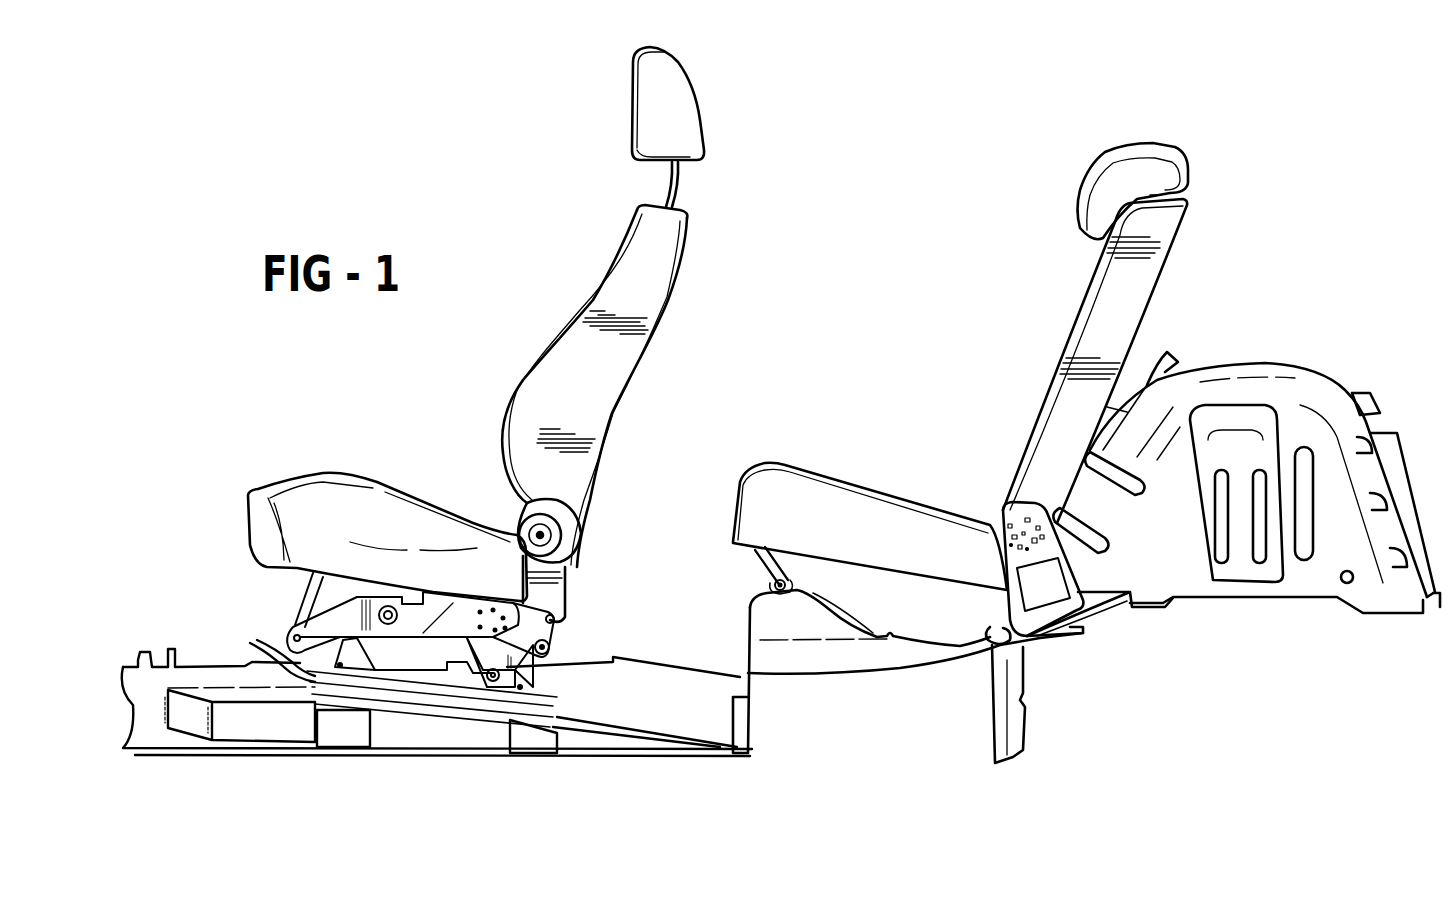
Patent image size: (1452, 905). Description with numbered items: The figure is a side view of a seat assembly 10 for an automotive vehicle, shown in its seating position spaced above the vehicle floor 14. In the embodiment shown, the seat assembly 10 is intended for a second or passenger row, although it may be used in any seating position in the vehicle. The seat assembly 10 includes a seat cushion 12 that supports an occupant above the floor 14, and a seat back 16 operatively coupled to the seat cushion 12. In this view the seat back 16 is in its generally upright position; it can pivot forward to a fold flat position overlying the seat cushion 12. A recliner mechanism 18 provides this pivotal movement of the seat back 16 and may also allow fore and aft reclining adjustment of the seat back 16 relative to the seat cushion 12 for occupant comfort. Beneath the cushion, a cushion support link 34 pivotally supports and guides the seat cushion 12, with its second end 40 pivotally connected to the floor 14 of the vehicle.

The seat assembly 10 is at (926, 200).
The seat cushion 12 is at (807, 465).
The floor 14 is at (890, 630).
The seat back 16 is at (1060, 362).
The recliner mechanism 18 is at (1000, 515).
The cushion support link 34 is at (757, 558).
The second end 40 is at (773, 588).